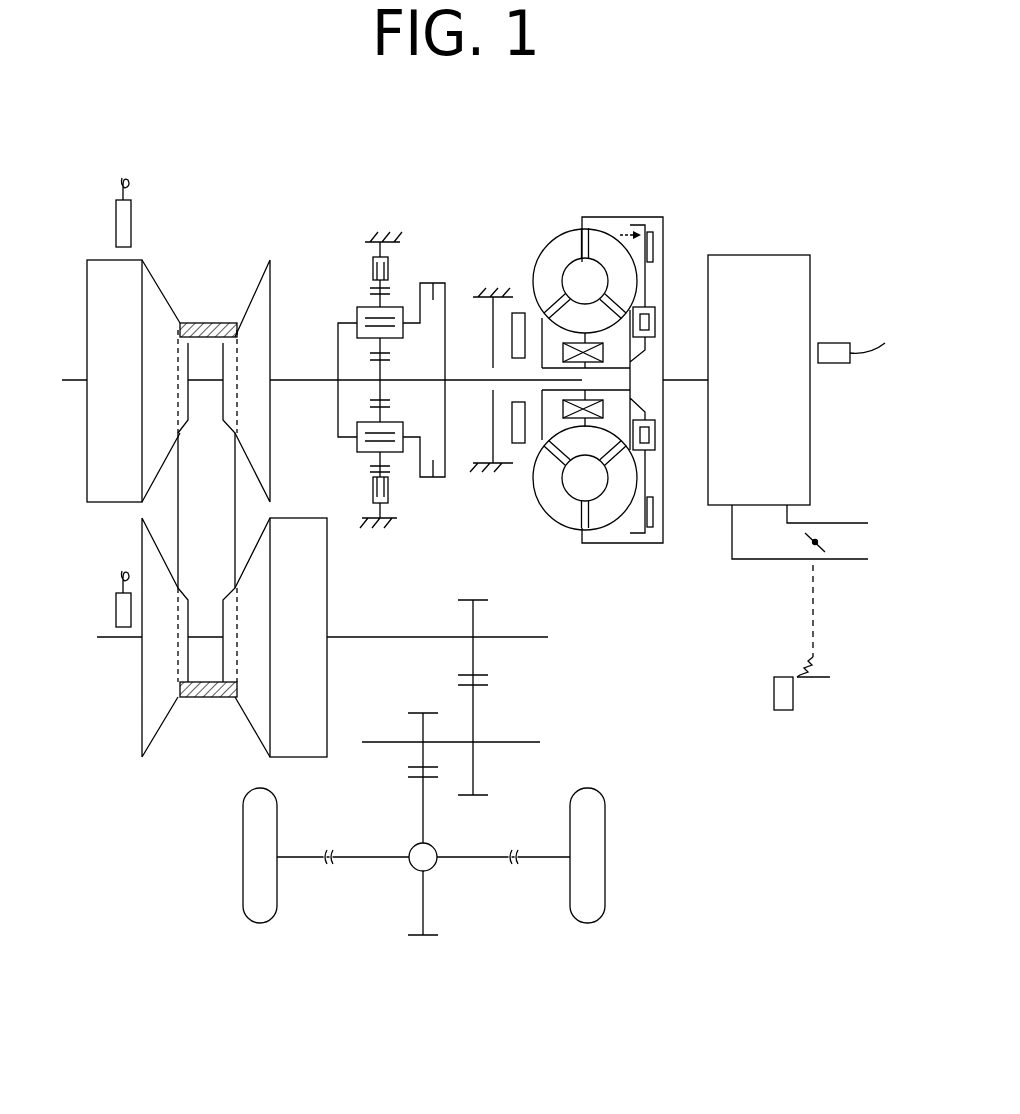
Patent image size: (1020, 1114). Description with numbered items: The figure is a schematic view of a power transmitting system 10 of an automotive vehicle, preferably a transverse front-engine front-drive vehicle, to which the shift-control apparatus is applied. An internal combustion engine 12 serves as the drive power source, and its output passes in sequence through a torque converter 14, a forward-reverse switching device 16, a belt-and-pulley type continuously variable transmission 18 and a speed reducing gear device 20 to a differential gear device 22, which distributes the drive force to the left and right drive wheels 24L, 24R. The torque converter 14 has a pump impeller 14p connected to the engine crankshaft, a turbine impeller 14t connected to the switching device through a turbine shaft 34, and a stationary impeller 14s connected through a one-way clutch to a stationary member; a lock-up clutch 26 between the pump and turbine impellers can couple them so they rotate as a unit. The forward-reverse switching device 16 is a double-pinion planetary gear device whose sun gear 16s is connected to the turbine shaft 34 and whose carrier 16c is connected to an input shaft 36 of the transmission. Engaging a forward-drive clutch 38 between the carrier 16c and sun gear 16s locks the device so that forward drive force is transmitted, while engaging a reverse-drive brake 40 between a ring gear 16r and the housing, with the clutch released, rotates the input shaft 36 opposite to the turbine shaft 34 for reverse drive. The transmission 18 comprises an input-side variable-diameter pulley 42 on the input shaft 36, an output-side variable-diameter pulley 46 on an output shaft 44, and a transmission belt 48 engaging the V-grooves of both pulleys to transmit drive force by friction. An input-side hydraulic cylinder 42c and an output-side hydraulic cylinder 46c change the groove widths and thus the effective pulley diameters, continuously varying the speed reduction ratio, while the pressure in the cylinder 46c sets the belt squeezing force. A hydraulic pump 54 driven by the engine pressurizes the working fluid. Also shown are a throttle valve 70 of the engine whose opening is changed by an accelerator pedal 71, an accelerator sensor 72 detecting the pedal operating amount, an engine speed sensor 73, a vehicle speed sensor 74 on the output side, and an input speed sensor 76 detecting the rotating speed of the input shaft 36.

The power transmitting system 10 is at (766, 186).
The internal combustion engine 12 is at (800, 330).
The torque converter 14 is at (587, 190).
The pump impeller 14p is at (552, 507).
The turbine impeller 14t is at (603, 512).
The stationary impeller 14s is at (542, 327).
The forward-reverse switching device 16 is at (299, 212).
The carrier 16c is at (355, 318).
The sun gear 16s is at (377, 388).
The ring gear 16r is at (370, 478).
The belt-and-pulley type continuously variable transmission 18 is at (200, 772).
The speed reducing gear device 20 is at (556, 696).
The differential gear device 22 is at (415, 868).
The left drive wheel 24L is at (247, 878).
The right drive wheel 24R is at (593, 872).
The lock-up clutch 26 is at (652, 242).
The turbine shaft 34 is at (457, 382).
The input shaft 36 is at (300, 380).
The forward-drive clutch 38 is at (425, 480).
The reverse-drive brake 40 is at (372, 262).
The input-side variable-diameter pulley 42 is at (98, 283).
The input-side hydraulic cylinder 42c is at (107, 360).
The output shaft 44 is at (397, 640).
The output-side variable-diameter pulley 46 is at (320, 615).
The output-side hydraulic cylinder 46c is at (293, 757).
The transmission belt 48 is at (208, 323).
The hydraulic pump 54 is at (513, 312).
The throttle valve 70 is at (810, 532).
The accelerator pedal 71 is at (818, 657).
The accelerator sensor 72 is at (783, 707).
The engine speed sensor 73 is at (833, 360).
The vehicle speed sensor 74 is at (116, 612).
The input speed sensor 76 is at (131, 222).